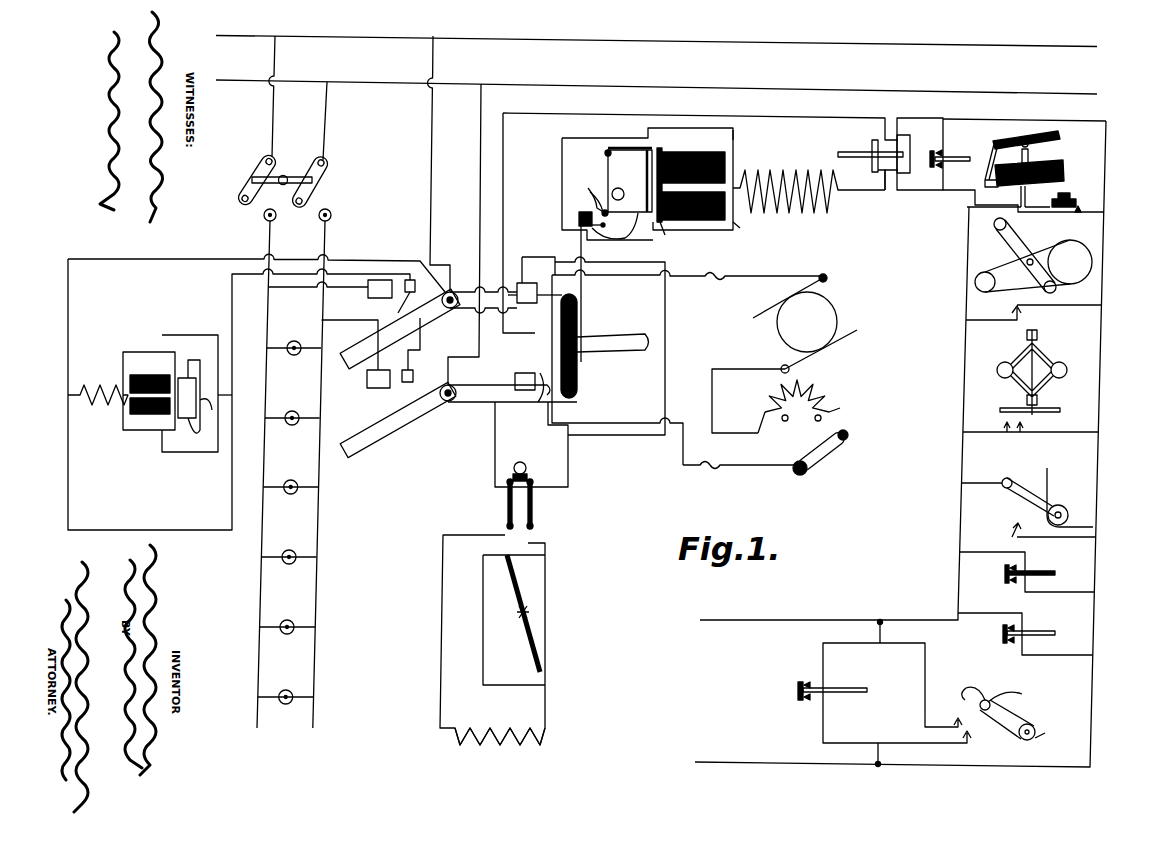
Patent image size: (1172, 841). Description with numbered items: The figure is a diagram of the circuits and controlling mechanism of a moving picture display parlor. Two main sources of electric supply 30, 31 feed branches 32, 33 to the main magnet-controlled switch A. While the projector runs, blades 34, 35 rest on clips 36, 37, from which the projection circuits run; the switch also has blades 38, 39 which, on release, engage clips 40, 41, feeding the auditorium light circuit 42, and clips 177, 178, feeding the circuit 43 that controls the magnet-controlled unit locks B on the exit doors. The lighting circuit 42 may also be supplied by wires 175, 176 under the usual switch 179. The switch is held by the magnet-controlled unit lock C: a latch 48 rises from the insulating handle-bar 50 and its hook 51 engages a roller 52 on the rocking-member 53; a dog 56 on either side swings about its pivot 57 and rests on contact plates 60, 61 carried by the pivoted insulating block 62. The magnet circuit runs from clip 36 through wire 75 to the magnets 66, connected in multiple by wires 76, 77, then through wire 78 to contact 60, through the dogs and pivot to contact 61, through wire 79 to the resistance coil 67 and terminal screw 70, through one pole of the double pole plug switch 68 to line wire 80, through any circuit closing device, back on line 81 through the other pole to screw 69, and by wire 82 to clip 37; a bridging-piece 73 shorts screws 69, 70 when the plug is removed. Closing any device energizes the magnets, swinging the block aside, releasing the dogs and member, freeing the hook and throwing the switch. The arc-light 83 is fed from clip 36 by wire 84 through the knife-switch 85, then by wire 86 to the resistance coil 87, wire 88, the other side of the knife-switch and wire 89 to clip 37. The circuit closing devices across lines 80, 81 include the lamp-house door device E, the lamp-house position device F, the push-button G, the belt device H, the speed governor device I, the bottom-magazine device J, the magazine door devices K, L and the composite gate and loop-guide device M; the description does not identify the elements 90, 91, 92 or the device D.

The main source of electric supply 30 is at (676, 34).
The main source of electric supply 31 is at (666, 80).
The branch 32 is at (431, 140).
The branch 33 is at (478, 140).
The blade 34 is at (544, 314).
The blade 35 is at (520, 395).
The clip 36 is at (517, 285).
The clip 37 is at (538, 405).
The blade 38 is at (364, 340).
The blade 39 is at (368, 440).
The clip 40 is at (370, 296).
The clip 41 is at (367, 384).
The auditorium light circuit 42 is at (312, 456).
The circuit 43 is at (212, 288).
The latch 48 is at (581, 305).
The insulating handle-bar 50 is at (578, 372).
The hook 51 is at (582, 205).
The roller 52 is at (579, 218).
The rocking-member 53 is at (592, 226).
The dog 56 is at (636, 132).
The pivot 57 is at (607, 186).
The contact plate 60 is at (660, 150).
The contact plate 61 is at (665, 235).
The insulating block 62 is at (650, 178).
The magnets 66 is at (725, 165).
The resistance coil 67 is at (810, 212).
The double pole plug switch 68 is at (920, 154).
The terminal screw 69 is at (875, 140).
The terminal screw 70 is at (878, 172).
The bridging-piece 73 is at (850, 150).
The wire 75 is at (540, 295).
The wire 76 is at (638, 235).
The wire 77 is at (562, 172).
The wire 78 is at (735, 131).
The wire 79 is at (740, 225).
The line wire 80 is at (955, 218).
The line wire 81 is at (1105, 168).
The wire 82 is at (553, 144).
The arc-light 83 is at (517, 611).
The wire 84 is at (553, 240).
The knife-switch 85 is at (532, 505).
The wire 86 is at (483, 652).
The resistance coil 87 is at (500, 752).
The wire 88 is at (442, 633).
The wire 89 is at (495, 455).
The conductor 90 is at (683, 465).
The burner 91 is at (803, 427).
The switch blade 92 is at (768, 285).
The wire 175 is at (272, 112).
The wire 176 is at (327, 112).
The clip 177 is at (409, 299).
The clip 178 is at (406, 382).
The switch 179 is at (312, 185).
The main magnet-controlled switch A is at (446, 346).
The magnet-controlled unit lock B is at (150, 405).
The magnet-controlled unit lock C is at (579, 165).
The motor D is at (807, 322).
The contact make-and-break device E is at (1018, 143).
The contact make-and-break device F is at (1015, 169).
The push-button G is at (1072, 194).
The belt-controlled make-and-break device H is at (1029, 410).
The speed-controlled make-and-break device I is at (1030, 381).
The contact make-and-break device J is at (1029, 502).
The contact make-and-break device K is at (1027, 572).
The contact make-and-break device L is at (1025, 634).
The composite make-and-break device M is at (921, 692).